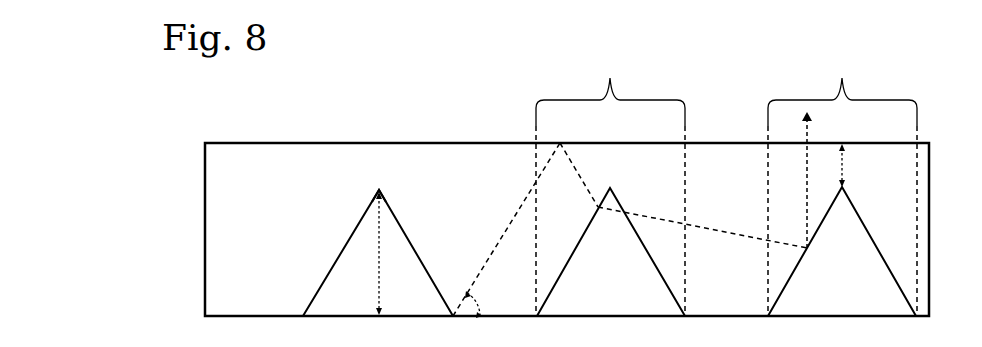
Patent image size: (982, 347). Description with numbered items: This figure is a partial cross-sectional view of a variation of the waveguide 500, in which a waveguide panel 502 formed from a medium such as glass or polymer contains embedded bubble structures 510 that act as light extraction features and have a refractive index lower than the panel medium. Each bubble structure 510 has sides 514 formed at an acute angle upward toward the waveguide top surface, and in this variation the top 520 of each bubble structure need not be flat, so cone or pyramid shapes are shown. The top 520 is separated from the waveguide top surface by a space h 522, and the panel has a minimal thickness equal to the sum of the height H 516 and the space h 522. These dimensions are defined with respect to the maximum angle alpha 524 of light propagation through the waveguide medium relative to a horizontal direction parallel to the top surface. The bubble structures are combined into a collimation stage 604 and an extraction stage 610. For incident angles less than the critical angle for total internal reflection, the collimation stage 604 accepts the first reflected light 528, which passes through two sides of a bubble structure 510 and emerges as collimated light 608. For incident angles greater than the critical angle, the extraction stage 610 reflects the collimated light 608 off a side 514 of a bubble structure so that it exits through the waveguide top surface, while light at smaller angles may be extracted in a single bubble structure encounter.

The waveguide 500 is at (275, 104).
The waveguide panel 502 is at (255, 170).
The bubble structure 510 is at (627, 270).
The side 514 is at (342, 250).
The gap (W) 516 is at (377, 265).
The top 520 is at (381, 190).
The space (h) 522 is at (843, 166).
The maximum angle (α) 524 is at (454, 318).
The first reflected light 528 is at (573, 167).
The collimation stage 604 is at (610, 164).
The collimated light 608 is at (719, 231).
The extraction stage 610 is at (842, 165).